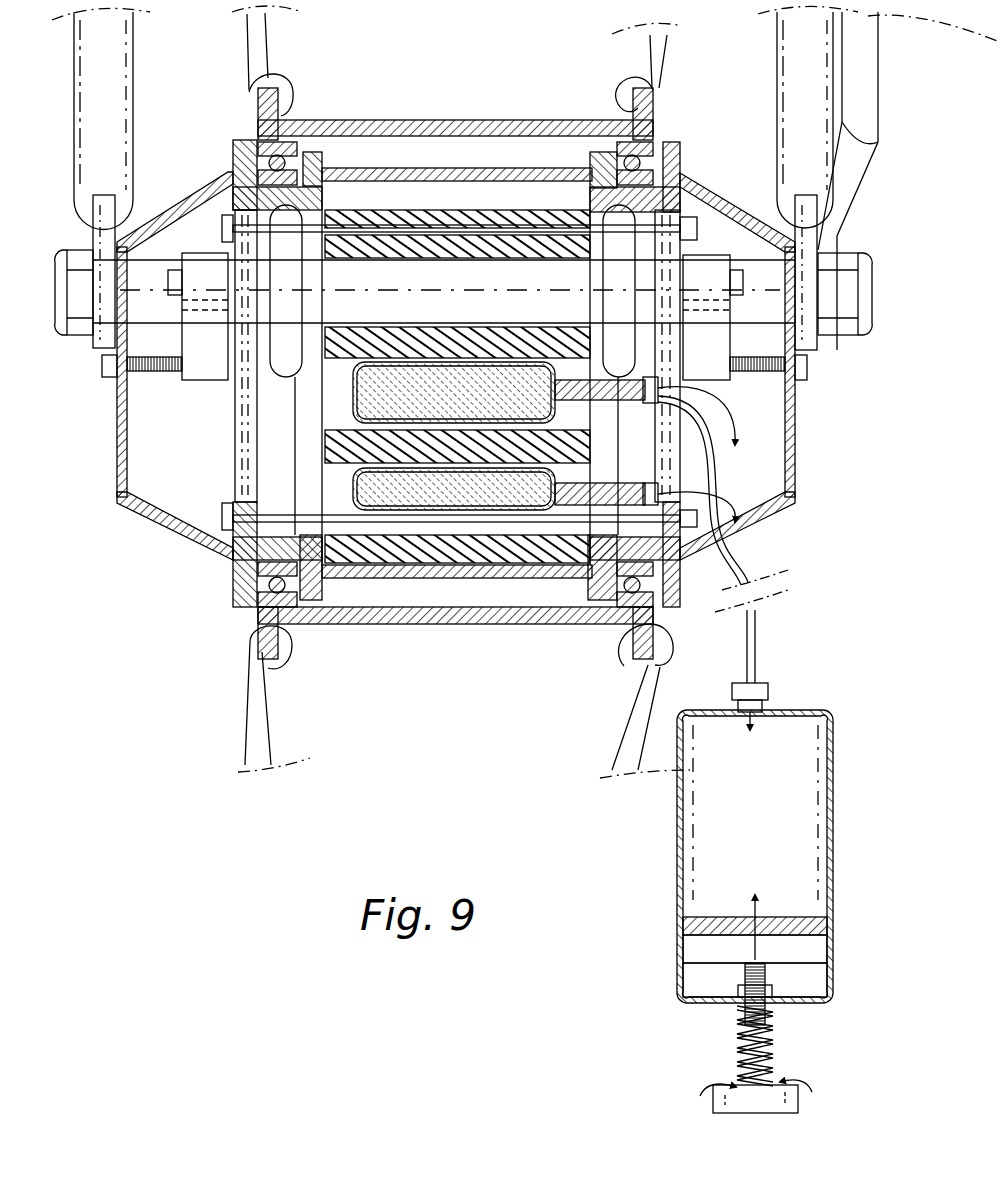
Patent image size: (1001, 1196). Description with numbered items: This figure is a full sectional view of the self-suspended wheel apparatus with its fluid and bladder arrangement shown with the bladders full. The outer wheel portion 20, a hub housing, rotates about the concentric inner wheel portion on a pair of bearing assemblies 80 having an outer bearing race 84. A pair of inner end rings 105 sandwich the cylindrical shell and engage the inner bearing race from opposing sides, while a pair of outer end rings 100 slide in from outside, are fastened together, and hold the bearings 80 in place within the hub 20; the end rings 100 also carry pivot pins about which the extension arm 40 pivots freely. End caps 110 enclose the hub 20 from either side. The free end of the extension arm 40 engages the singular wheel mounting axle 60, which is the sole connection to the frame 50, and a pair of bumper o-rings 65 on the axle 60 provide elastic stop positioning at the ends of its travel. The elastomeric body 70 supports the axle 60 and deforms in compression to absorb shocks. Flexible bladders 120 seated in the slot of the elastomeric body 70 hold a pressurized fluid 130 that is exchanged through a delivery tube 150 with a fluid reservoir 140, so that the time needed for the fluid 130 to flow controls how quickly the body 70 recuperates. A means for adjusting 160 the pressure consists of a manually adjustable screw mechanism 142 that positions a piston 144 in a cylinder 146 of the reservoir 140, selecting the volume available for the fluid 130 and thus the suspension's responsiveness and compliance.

The outer wheel portion 20 is at (415, 120).
The extension arm 40 is at (195, 255).
The frame 50 is at (130, 56).
The wheel mounting axle 60 is at (470, 300).
The bumper o-rings 65 is at (302, 290).
The elastomeric body 70 is at (328, 442).
The bearing assemblies 80 is at (655, 122).
The outer bearing race 84 is at (256, 136).
The outer end rings 100 is at (240, 168).
The inner end rings 105 is at (592, 190).
The end caps 110 is at (722, 200).
The flexible bladder 120 is at (353, 392).
The pressurized fluid 130 is at (688, 922).
The fluid reservoir 140 is at (595, 840).
The screw mechanism 142 is at (732, 1000).
The piston 144 is at (690, 958).
The cylinder 146 is at (830, 990).
The delivery tube 150 is at (757, 652).
The means for adjusting 160 is at (718, 1090).